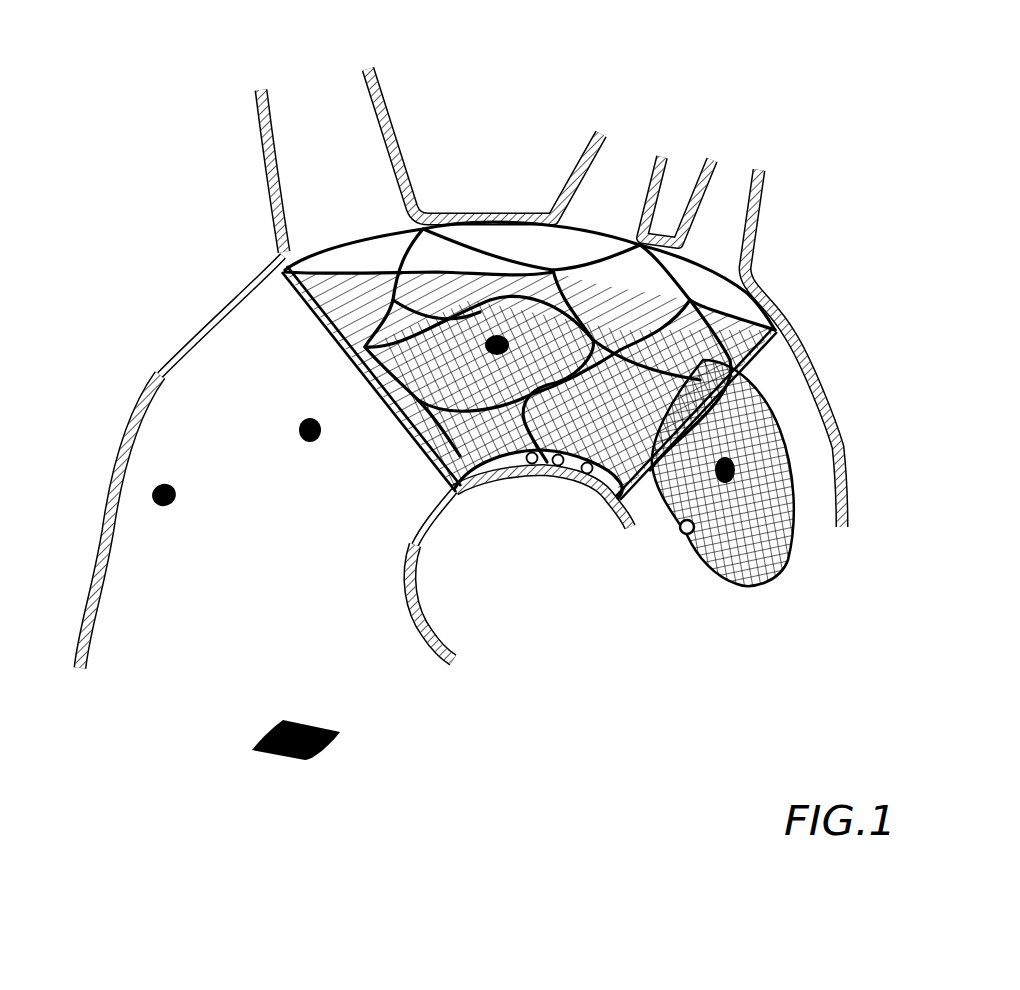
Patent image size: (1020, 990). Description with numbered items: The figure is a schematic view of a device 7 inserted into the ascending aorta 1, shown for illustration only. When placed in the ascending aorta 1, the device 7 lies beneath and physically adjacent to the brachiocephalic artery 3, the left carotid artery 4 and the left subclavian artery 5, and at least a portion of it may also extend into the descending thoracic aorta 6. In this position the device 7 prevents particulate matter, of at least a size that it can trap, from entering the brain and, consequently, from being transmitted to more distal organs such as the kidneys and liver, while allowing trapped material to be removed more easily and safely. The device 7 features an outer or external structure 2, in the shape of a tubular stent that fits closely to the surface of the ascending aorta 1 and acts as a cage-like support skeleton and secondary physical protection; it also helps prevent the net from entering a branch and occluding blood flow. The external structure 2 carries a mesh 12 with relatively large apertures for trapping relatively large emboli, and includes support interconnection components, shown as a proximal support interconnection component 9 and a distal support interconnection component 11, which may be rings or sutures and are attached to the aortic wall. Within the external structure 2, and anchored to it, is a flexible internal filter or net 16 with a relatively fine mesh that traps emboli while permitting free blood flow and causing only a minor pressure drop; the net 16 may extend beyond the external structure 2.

The ascending aorta 1 is at (150, 614).
The external structure 2 is at (667, 215).
The brachiocephalic artery 3 is at (296, 103).
The left carotid artery 4 is at (626, 150).
The left subclavian artery 5 is at (730, 185).
The descending thoracic aorta 6 is at (803, 458).
The device 7 is at (544, 472).
The proximal support interconnection component 9 is at (342, 366).
The distal support interconnection component 11 is at (760, 370).
The mesh 12 is at (487, 238).
The filter or net 16 is at (783, 533).